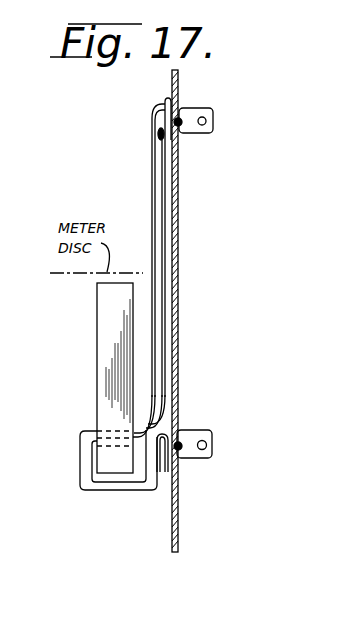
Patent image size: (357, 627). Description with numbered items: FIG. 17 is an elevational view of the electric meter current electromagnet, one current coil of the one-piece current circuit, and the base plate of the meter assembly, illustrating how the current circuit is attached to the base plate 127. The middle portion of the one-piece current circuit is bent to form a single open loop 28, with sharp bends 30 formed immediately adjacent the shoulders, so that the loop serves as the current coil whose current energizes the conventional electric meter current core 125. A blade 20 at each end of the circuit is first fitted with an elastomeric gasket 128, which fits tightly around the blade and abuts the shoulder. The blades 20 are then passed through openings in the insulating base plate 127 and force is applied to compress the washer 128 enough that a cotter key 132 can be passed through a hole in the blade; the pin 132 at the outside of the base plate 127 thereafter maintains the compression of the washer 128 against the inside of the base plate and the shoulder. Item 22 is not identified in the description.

The blade 20 is at (213, 108).
The hook 22 is at (153, 108).
The open loop 28 is at (80, 455).
The sharp bends 30 is at (150, 140).
The electric meter current core 125 is at (103, 362).
The base plate 127 is at (179, 325).
The elastomeric gasket 128 is at (178, 163).
The cotter key 132 is at (181, 124).